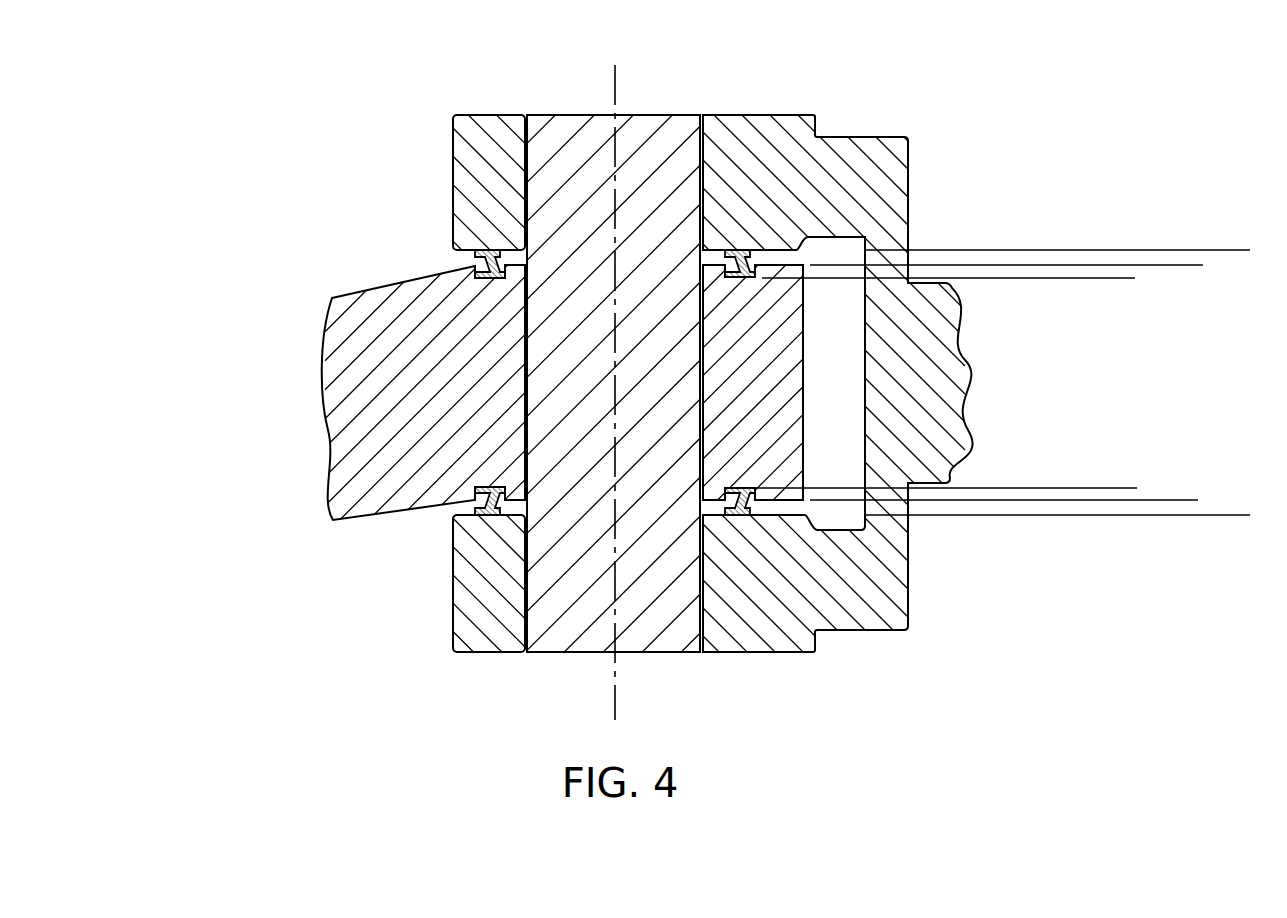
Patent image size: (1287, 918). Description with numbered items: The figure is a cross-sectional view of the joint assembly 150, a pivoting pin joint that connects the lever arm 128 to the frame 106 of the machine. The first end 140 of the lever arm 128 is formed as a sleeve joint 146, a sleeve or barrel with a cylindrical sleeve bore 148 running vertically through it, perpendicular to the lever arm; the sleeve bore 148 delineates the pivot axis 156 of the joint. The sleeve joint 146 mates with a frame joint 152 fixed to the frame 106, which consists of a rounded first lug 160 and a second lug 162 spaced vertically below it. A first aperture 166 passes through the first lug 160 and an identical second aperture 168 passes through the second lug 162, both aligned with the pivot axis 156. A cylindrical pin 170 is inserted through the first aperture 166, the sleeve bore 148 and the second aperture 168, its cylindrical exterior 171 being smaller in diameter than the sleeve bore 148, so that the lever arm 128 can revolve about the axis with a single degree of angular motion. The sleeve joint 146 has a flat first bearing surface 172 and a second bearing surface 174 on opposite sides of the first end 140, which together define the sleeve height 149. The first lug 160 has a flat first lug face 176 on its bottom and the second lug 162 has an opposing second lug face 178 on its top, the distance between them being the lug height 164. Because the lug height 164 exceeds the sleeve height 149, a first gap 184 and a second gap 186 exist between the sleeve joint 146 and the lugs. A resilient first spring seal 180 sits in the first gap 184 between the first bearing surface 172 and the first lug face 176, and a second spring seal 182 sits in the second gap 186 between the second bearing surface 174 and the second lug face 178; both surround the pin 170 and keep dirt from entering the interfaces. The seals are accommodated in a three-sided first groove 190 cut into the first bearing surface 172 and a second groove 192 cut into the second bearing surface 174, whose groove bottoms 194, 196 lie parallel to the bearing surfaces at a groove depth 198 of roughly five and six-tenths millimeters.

The frame 106 is at (891, 350).
The lever arm 128 is at (346, 376).
The first end 140 is at (462, 272).
The sleeve joint 146 is at (803, 385).
The sleeve bore 148 is at (528, 285).
The sleeve height 149 is at (1149, 265).
The joint assembly 150 is at (530, 58).
The frame joint 152 is at (855, 350).
The pivot axis 156 is at (672, 145).
The first lug 160 is at (485, 147).
The second lug 162 is at (475, 603).
The lug height 164 is at (1228, 250).
The first aperture 166 is at (527, 117).
The second aperture 168 is at (527, 650).
The pin 170 is at (757, 150).
The cylindrical exterior 171 is at (712, 597).
The first bearing surface 172 is at (822, 240).
The second bearing surface 174 is at (778, 516).
The first lug face 176 is at (788, 255).
The second lug face 178 is at (815, 642).
The first spring seal 180 is at (490, 250).
The second spring seal 182 is at (480, 508).
The first gap 184 is at (1185, 305).
The second gap 186 is at (1185, 462).
The first groove 190 is at (745, 252).
The second groove 192 is at (755, 502).
The groove bottom 194 is at (478, 278).
The groove bottom 196 is at (483, 485).
The groove depth 198 is at (1112, 305).